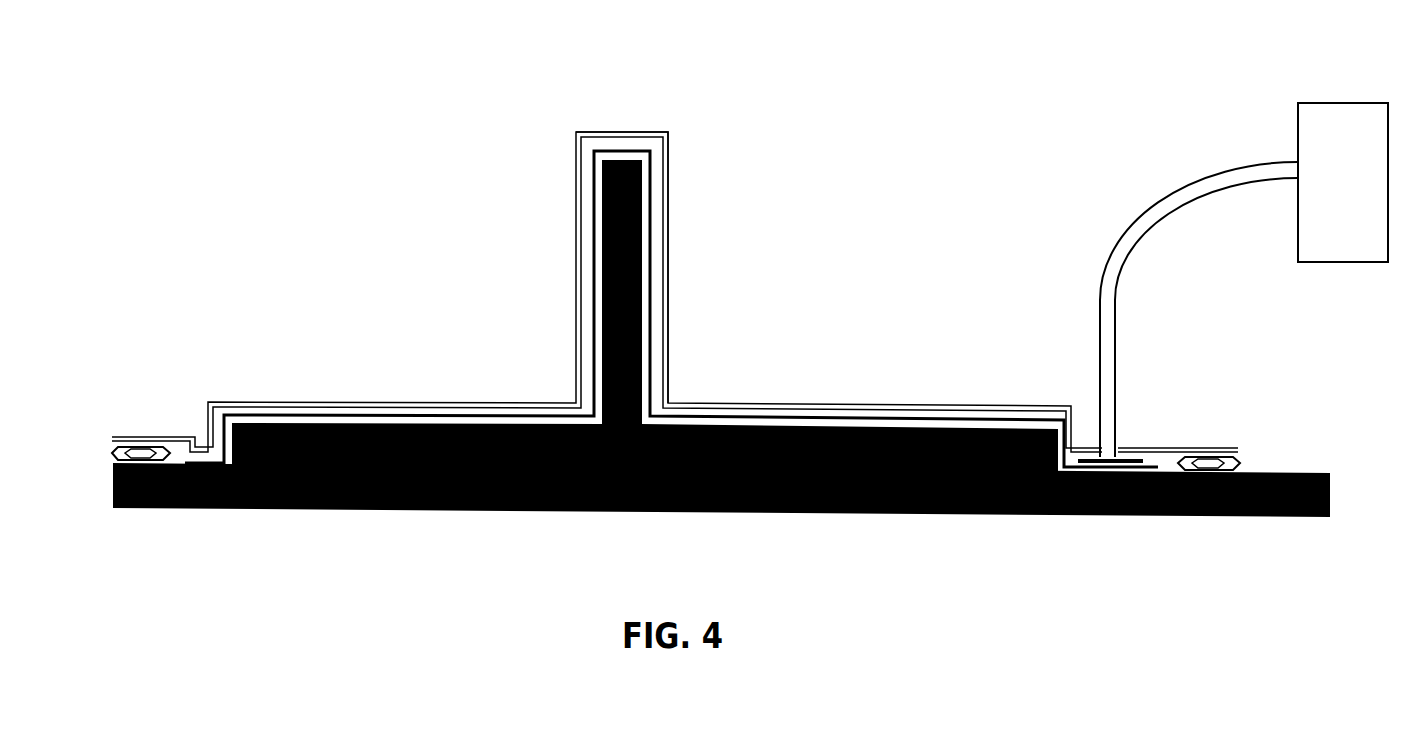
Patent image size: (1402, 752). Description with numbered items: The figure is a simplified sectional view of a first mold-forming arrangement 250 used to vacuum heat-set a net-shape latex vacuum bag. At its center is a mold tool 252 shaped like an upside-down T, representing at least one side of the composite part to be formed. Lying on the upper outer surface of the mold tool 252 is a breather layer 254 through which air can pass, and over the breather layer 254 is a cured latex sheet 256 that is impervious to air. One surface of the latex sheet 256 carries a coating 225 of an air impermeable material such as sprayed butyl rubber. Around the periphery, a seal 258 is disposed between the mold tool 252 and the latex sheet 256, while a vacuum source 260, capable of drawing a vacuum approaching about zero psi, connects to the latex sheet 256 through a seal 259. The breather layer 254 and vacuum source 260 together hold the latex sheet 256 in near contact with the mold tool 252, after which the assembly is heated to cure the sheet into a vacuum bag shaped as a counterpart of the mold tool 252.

The coating 225 is at (598, 130).
The first mold-forming arrangement 250 is at (394, 190).
The mold tool 252 is at (384, 513).
The breather layer 254 is at (466, 421).
The latex sheet 256 is at (658, 260).
The seal 258 is at (130, 450).
The seal 259 is at (1127, 458).
The vacuum source 260 is at (1335, 253).